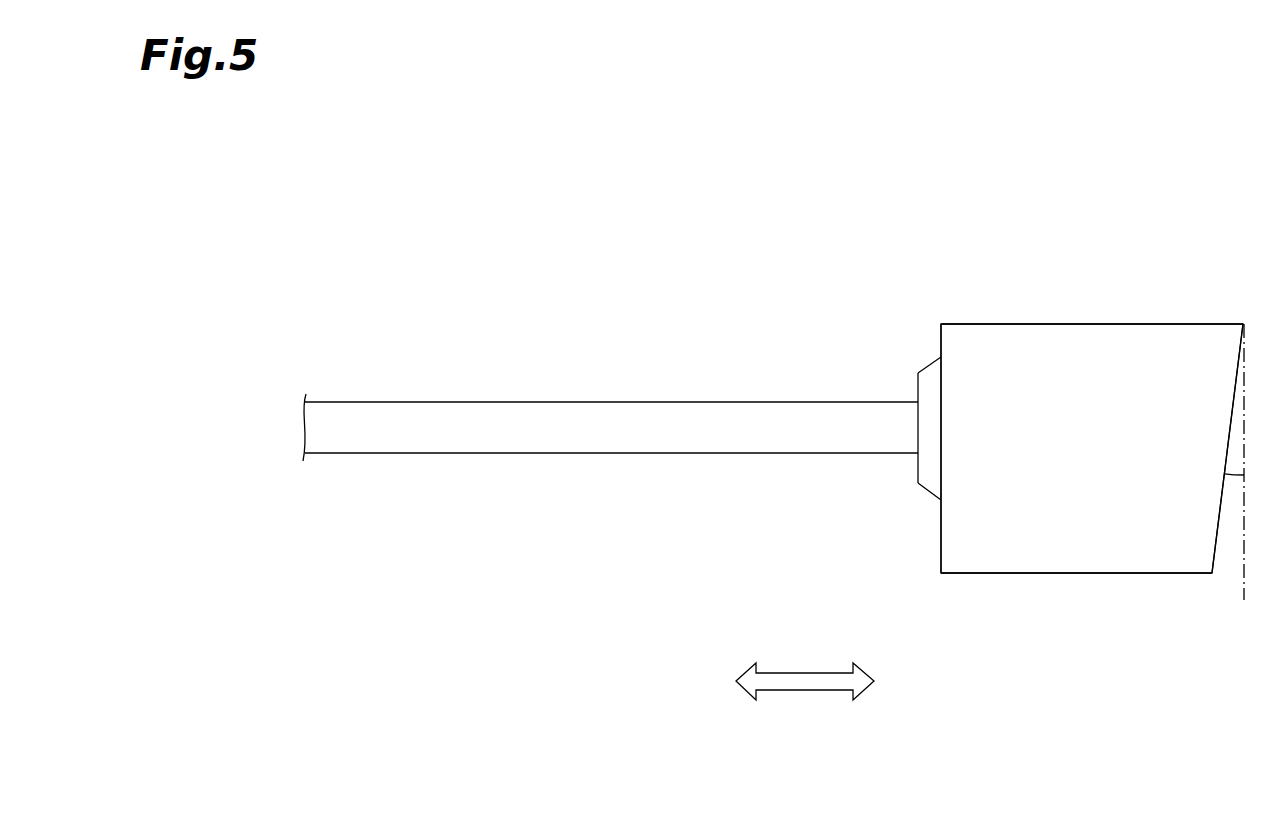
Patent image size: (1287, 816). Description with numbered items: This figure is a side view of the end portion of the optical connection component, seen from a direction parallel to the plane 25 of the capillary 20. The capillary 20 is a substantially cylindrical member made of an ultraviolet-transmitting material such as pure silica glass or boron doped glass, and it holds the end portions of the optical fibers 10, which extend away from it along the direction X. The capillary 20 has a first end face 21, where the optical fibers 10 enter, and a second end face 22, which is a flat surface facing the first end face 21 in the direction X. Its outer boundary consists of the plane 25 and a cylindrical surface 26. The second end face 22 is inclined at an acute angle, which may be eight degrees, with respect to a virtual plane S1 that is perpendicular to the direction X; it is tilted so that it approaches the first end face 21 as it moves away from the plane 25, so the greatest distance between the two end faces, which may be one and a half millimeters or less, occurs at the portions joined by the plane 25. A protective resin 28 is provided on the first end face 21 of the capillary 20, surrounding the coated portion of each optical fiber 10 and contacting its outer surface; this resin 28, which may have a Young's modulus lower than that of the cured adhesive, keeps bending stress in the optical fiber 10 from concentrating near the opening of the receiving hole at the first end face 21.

The optical fiber 10 is at (610, 402).
The capillary 20 is at (998, 323).
The first end face 21 is at (939, 532).
The second end face 22 is at (1222, 545).
The plane 25 is at (1109, 323).
The cylindrical surface 26 is at (1093, 535).
The protective resin 28 is at (932, 397).
The virtual plane S1 is at (1240, 540).
The direction X is at (806, 693).